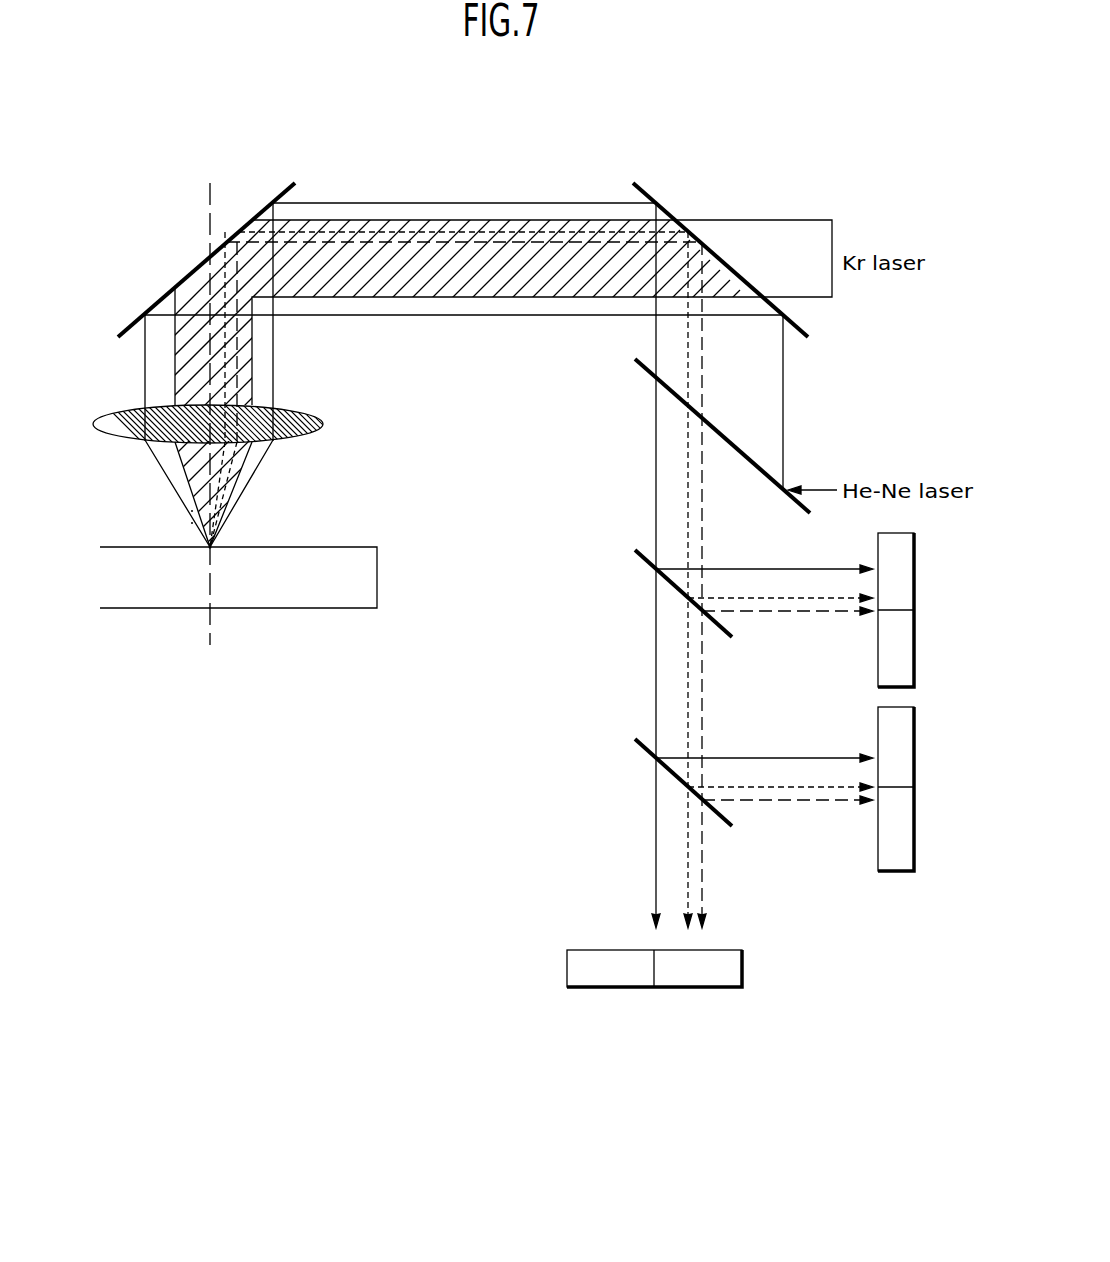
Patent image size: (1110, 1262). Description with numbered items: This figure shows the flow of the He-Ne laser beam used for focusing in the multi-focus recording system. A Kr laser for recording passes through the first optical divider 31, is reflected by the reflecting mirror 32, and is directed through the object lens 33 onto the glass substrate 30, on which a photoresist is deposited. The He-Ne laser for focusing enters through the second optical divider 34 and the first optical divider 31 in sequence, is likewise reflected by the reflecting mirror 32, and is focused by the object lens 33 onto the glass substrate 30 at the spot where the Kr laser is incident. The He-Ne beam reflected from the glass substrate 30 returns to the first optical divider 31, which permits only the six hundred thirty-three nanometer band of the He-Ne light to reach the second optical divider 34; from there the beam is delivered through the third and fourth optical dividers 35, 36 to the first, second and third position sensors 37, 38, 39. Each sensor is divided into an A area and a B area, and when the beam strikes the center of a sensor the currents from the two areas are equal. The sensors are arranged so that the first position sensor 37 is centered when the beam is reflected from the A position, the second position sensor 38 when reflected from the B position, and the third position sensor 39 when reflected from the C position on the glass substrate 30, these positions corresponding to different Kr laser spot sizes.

The glass substrate 30 is at (362, 577).
The first optical divider 31 is at (677, 220).
The reflecting mirror 32 is at (162, 296).
The object lens 33 is at (275, 410).
The second optical divider 34 is at (634, 359).
The third optical divider 35 is at (634, 550).
The fourth optical divider 36 is at (634, 740).
The first position sensor 37 is at (708, 988).
The second position sensor 38 is at (898, 872).
The third position sensor 39 is at (916, 662).
The A position A is at (213, 544).
The B position B is at (192, 523).
The C position C is at (192, 511).